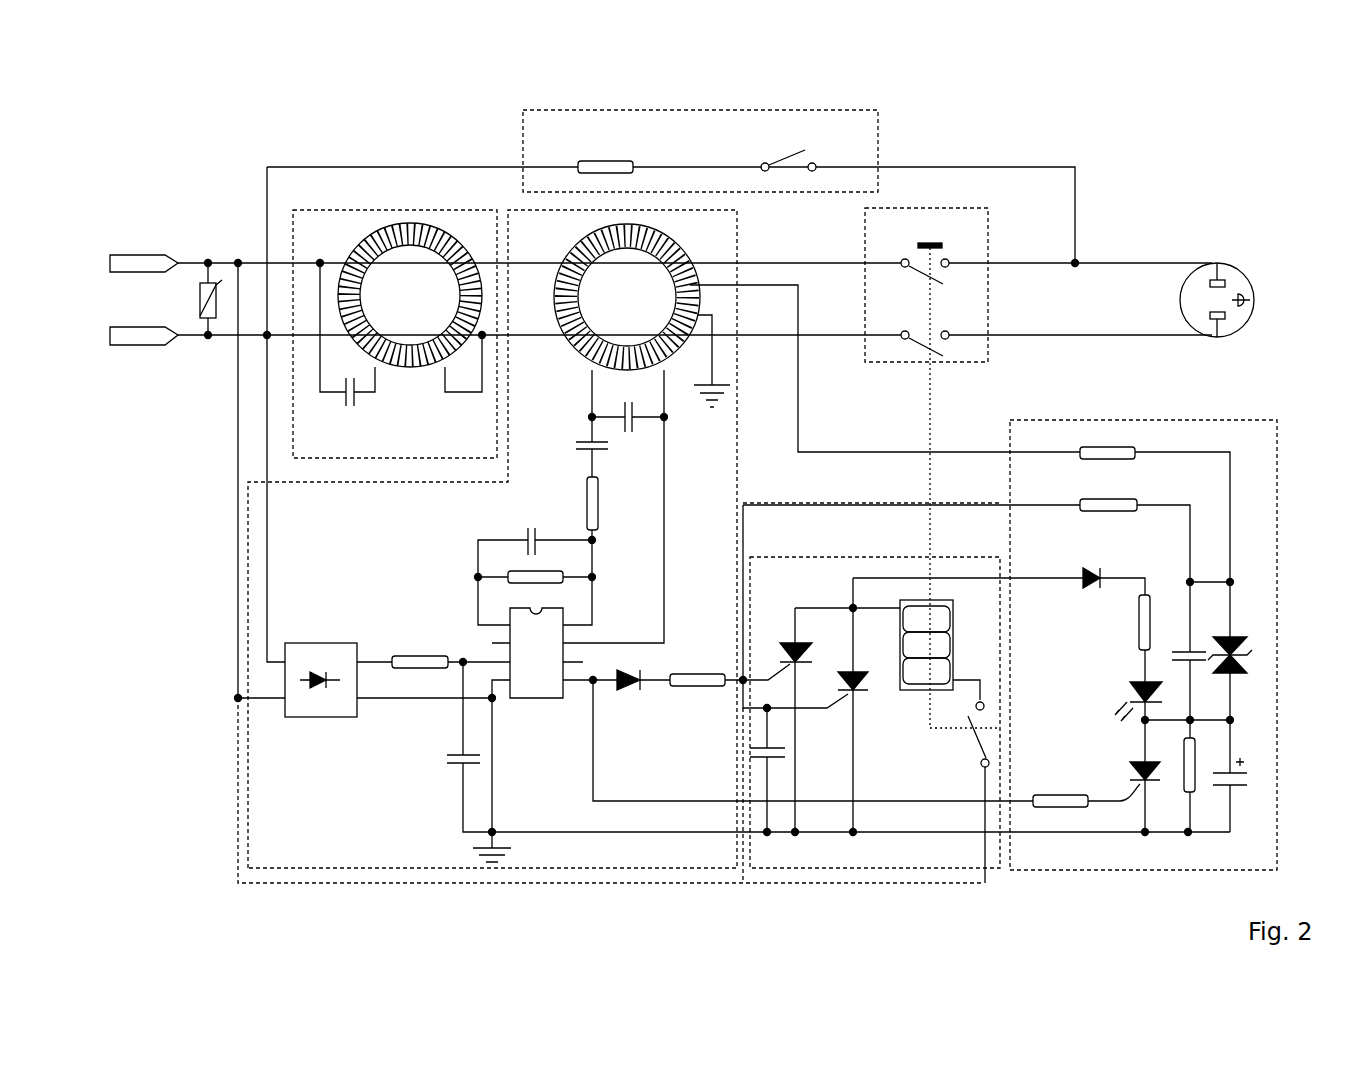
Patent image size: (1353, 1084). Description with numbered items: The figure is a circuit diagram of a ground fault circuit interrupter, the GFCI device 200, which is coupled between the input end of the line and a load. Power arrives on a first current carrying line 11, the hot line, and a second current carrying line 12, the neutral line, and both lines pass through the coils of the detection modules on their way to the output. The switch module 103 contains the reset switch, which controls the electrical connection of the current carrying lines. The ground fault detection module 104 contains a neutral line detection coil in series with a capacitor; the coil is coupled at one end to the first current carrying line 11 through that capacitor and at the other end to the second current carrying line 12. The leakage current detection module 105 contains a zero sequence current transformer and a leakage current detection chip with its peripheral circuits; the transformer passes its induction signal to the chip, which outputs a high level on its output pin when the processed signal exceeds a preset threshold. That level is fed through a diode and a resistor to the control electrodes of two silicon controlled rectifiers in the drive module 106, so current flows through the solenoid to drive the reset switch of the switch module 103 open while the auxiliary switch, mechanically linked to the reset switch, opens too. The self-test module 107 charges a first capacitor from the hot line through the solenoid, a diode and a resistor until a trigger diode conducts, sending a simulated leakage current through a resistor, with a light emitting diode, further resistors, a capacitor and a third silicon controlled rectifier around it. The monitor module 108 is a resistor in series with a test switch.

The GFCI device 200 is at (1297, 111).
The first current carrying line 11 is at (181, 262).
The second current carrying line 12 is at (168, 338).
The switch module 103 is at (963, 208).
The ground fault detection module 104 is at (388, 207).
The leakage current detection module 105 is at (588, 870).
The drive module 106 is at (845, 873).
The self-test module 107 is at (1240, 418).
The monitor module 108 is at (742, 110).